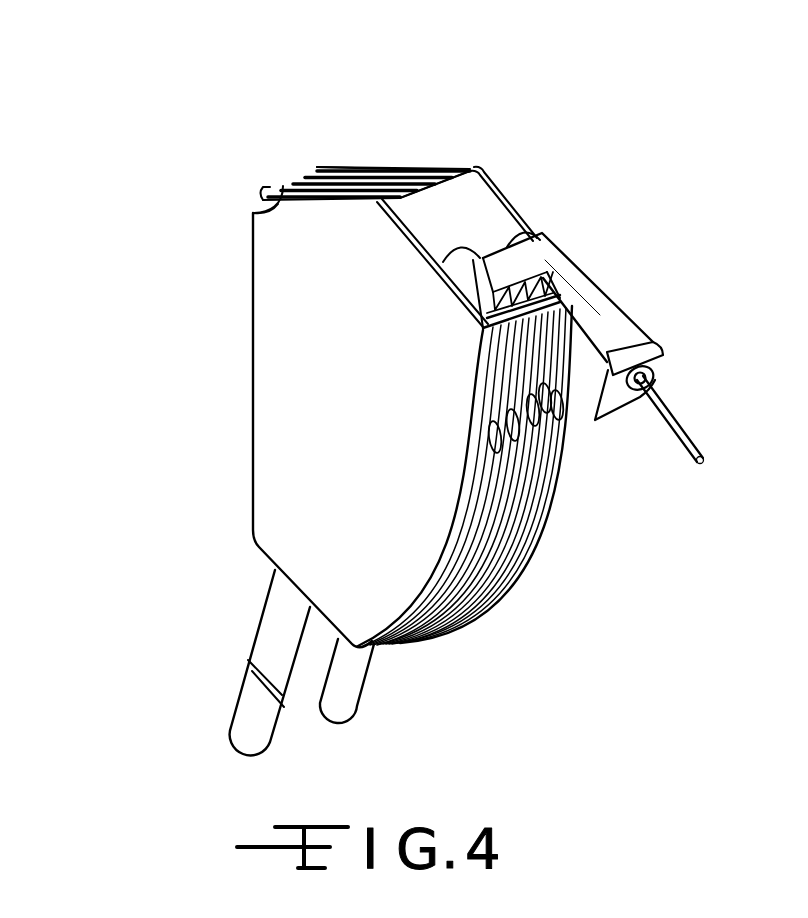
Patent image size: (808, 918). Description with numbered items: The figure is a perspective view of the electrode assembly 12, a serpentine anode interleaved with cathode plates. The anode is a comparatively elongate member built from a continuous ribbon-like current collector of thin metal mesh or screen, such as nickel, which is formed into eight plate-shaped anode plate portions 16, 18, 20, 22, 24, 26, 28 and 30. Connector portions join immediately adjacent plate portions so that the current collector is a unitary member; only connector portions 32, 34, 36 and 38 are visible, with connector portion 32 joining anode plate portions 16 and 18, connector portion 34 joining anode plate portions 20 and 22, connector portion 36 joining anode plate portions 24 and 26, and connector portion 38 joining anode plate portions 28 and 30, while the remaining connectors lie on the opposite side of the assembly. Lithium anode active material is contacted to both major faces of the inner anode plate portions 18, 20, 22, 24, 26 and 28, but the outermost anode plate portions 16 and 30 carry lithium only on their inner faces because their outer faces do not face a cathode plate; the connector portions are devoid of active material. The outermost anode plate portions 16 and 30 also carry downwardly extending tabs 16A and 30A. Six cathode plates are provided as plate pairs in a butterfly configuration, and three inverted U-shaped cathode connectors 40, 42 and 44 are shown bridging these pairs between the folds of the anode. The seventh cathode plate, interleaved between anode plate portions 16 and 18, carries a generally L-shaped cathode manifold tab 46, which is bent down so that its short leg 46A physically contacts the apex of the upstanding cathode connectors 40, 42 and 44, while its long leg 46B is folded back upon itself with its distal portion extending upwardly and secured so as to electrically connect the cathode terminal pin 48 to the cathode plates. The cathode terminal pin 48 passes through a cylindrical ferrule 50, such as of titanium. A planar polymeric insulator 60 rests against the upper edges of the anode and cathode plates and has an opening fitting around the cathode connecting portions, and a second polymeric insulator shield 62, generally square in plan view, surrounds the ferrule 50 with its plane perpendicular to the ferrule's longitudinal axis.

The electrode assembly 12 is at (490, 166).
The anode plate portion 16 is at (253, 240).
The downwardly extending tab 16A is at (270, 645).
The anode plate portion 18 is at (253, 213).
The anode plate portion 20 is at (283, 185).
The anode plate portion 22 is at (290, 172).
The anode plate portion 24 is at (307, 170).
The anode plate portion 26 is at (366, 167).
The anode plate portion 28 is at (333, 167).
The anode plate portion 30 is at (395, 165).
The downwardly extending tab 30A is at (345, 685).
The connector portion 32 is at (490, 385).
The connector portion 34 is at (505, 400).
The connector portion 36 is at (545, 410).
The connector portion 38 is at (555, 385).
The cathode connector 40 is at (437, 267).
The cathode connector 42 is at (500, 245).
The cathode connector 44 is at (540, 240).
The cathode manifold tab 46 is at (485, 305).
The short leg 46A is at (530, 262).
The long leg 46B is at (607, 343).
The cathode terminal pin 48 is at (690, 430).
The ferrule 50 is at (655, 378).
The planar polymeric insulator 60 is at (437, 220).
The polymeric insulator shield 62 is at (620, 400).